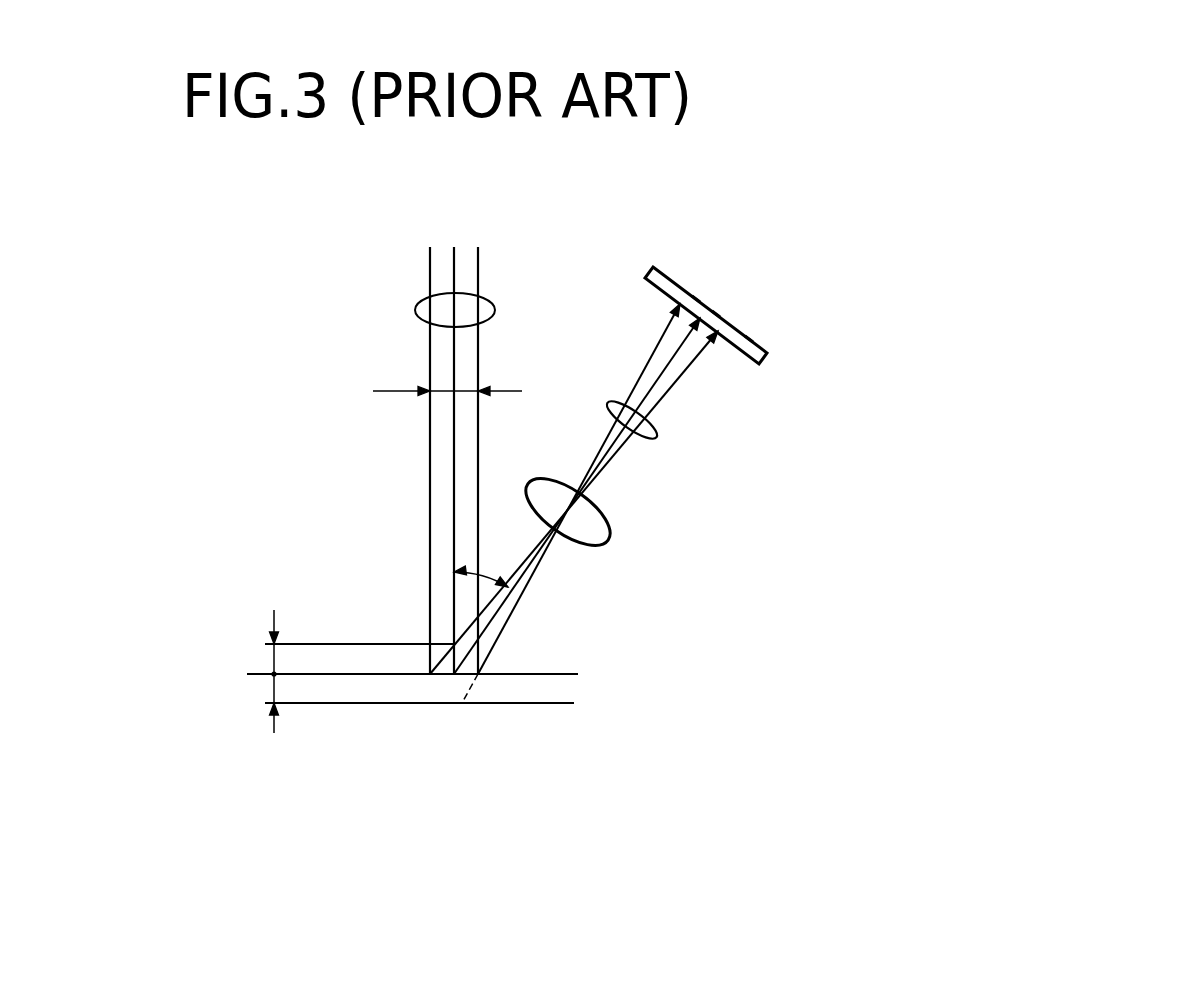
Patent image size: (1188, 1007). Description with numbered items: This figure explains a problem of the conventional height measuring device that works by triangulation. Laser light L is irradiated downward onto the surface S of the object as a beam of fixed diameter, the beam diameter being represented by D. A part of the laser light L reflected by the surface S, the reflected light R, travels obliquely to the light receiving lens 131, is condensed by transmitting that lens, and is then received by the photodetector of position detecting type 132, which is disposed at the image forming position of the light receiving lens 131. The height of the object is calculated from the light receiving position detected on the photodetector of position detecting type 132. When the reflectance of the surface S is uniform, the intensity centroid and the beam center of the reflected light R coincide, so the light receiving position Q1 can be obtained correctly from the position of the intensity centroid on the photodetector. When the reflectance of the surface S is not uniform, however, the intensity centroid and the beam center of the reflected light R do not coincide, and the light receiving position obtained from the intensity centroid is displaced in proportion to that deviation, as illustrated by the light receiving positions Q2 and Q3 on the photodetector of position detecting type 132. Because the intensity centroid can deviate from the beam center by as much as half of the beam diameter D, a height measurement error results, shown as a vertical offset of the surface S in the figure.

The laser light L is at (418, 310).
The beam diameter of laser light D is at (447, 377).
The surface of object S is at (562, 674).
The reflected light R is at (650, 438).
The light receiving lens 131 is at (598, 545).
The photodetector of position detecting type 132 is at (767, 357).
The light receiving position Q1 is at (716, 314).
The light receiving position Q2 is at (696, 299).
The light receiving position Q3 is at (749, 336).